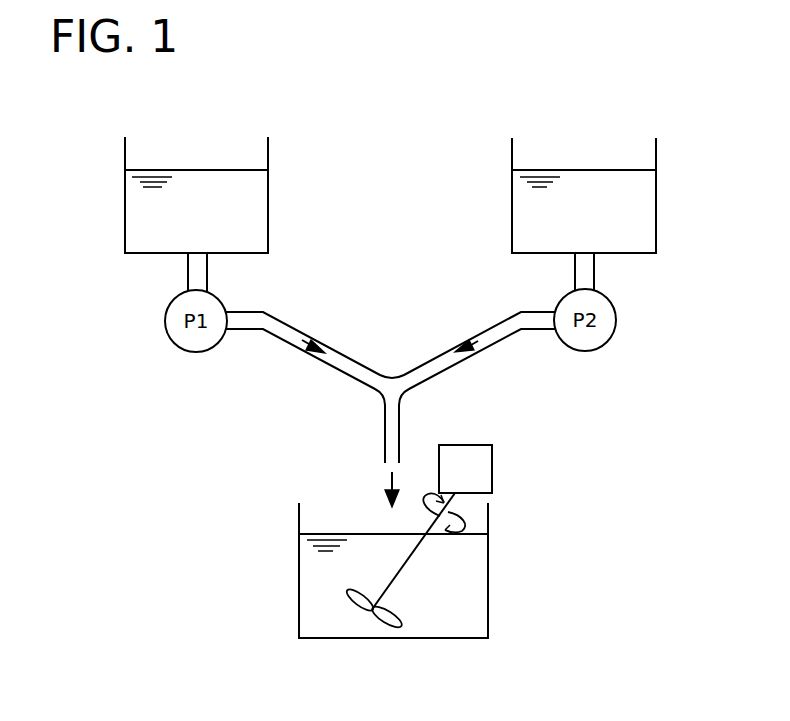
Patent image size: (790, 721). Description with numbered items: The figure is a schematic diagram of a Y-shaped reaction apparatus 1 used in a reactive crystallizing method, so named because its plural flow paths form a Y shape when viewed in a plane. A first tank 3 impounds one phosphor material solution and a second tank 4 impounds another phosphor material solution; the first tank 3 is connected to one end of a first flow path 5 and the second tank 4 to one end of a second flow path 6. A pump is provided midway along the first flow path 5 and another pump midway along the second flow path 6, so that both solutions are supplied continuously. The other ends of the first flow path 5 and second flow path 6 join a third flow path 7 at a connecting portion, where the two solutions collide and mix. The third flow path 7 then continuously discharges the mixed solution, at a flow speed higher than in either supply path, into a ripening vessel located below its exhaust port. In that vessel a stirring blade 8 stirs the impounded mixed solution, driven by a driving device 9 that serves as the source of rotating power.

The Y-shaped reaction apparatus 1 is at (502, 581).
The first tank 3 is at (268, 208).
The second tank 4 is at (656, 212).
The first flow path 5 is at (328, 363).
The second flow path 6 is at (440, 363).
The third flow path 7 is at (385, 432).
The stirring blade 8 is at (390, 622).
The driving device 9 is at (492, 468).